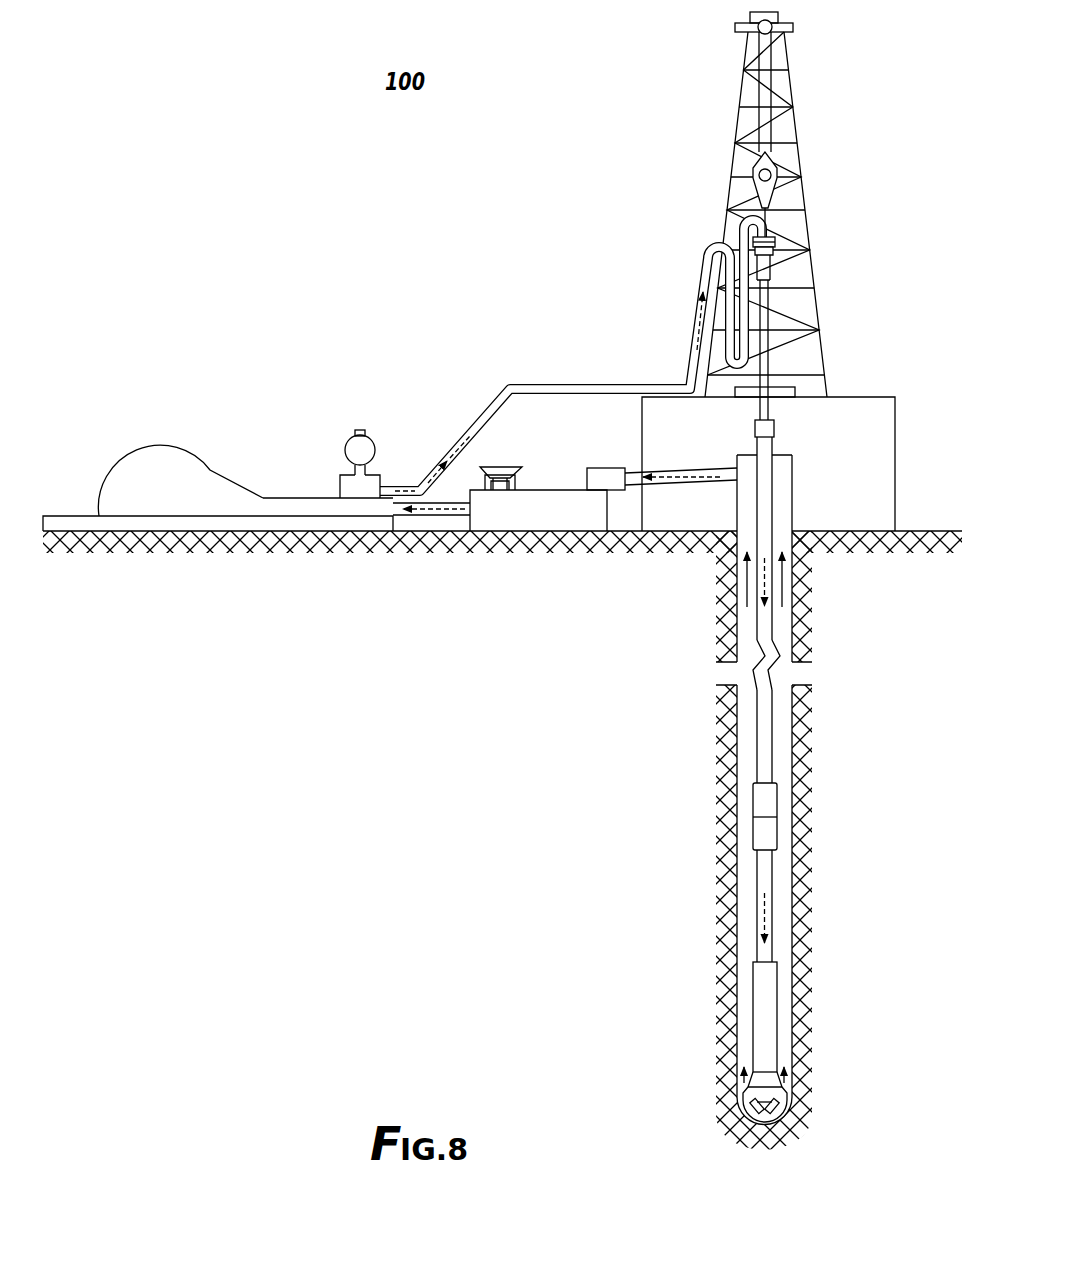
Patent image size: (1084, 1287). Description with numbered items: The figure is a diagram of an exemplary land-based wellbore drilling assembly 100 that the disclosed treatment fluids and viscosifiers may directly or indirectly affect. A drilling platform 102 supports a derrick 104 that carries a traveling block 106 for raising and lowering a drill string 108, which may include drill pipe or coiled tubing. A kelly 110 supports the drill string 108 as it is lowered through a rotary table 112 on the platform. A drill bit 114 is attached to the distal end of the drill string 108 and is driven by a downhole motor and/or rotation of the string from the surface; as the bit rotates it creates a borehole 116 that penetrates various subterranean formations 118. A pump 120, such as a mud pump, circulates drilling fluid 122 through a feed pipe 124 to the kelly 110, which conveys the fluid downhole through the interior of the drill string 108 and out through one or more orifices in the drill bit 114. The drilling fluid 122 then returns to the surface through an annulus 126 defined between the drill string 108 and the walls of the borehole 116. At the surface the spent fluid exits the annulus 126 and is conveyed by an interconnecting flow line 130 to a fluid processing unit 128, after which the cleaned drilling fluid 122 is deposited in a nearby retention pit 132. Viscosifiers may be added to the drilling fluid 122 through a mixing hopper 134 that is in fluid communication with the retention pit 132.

The wellbore drilling assembly 100 is at (466, 110).
The drilling platform 102 is at (877, 449).
The derrick 104 is at (795, 122).
The traveling block 106 is at (780, 163).
The drill string 108 is at (767, 637).
The kelly 110 is at (766, 300).
The rotary table 112 is at (798, 392).
The drill bit 114 is at (790, 1093).
The borehole 116 is at (790, 738).
The subterranean formations 118 is at (657, 792).
The pump 120 is at (127, 437).
The drilling fluid 122 is at (425, 478).
The feed pipe 124 is at (600, 382).
The annulus 126 is at (783, 988).
The fluid processing unit 128 is at (615, 467).
The flow line 130 is at (720, 467).
The retention pit 132 is at (553, 531).
The mixing hopper 134 is at (498, 465).